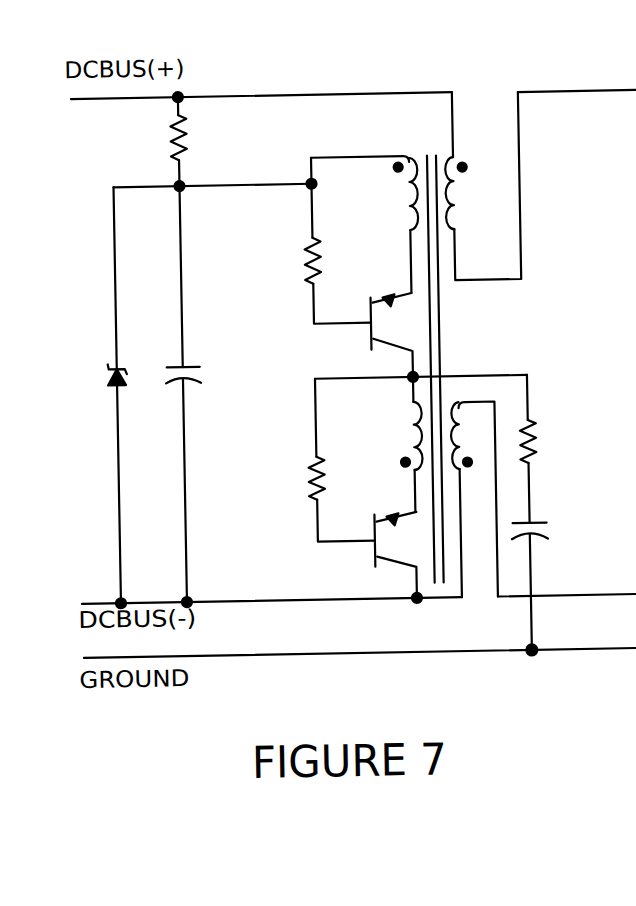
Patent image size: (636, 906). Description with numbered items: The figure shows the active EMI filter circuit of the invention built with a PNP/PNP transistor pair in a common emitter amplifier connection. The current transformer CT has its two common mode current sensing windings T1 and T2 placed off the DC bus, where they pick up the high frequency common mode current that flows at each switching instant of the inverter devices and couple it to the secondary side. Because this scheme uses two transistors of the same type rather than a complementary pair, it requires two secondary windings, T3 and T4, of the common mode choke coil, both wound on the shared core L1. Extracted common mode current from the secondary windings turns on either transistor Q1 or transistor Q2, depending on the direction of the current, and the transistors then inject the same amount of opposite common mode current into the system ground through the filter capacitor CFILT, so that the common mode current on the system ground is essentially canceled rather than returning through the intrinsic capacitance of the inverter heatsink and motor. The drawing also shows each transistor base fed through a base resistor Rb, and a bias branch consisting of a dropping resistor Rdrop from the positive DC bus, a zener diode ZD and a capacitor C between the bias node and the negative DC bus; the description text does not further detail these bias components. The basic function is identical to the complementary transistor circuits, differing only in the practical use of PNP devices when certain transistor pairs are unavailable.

The current transformer CT is at (428, 106).
The dropping resistor Rdrop is at (216, 141).
The zener diode ZD is at (93, 398).
The capacitor C is at (200, 396).
The base resistor Rb is at (339, 349).
The third winding T3 is at (365, 225).
The common mode current sensing winding T1 is at (482, 186).
The transformer core / inductor L1 is at (455, 369).
The bipolar transistor Q1 is at (394, 338).
The second secondary winding T4 is at (401, 445).
The PNP bipolar transistor Q2 is at (398, 558).
The common mode current sensing winding T2 is at (473, 500).
The filter capacitor CFILT is at (557, 515).